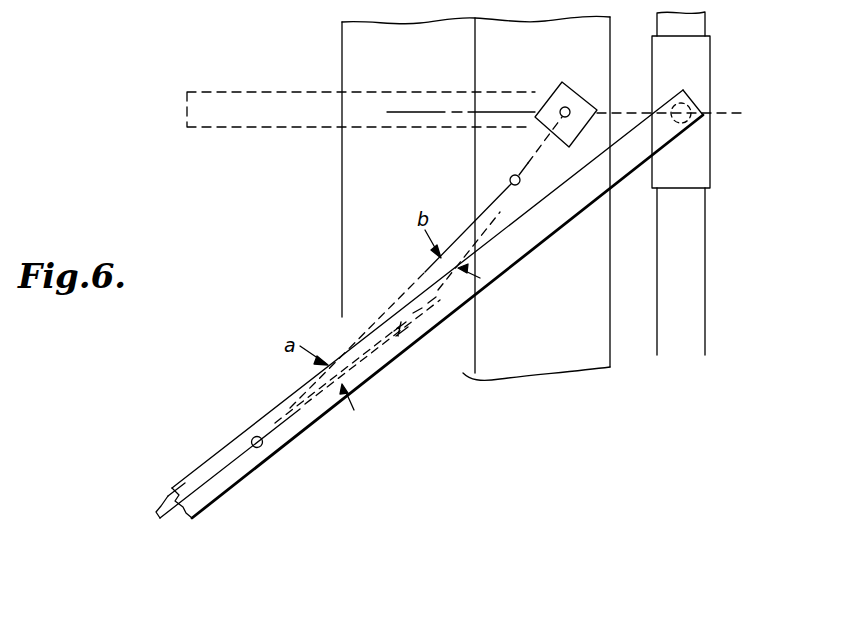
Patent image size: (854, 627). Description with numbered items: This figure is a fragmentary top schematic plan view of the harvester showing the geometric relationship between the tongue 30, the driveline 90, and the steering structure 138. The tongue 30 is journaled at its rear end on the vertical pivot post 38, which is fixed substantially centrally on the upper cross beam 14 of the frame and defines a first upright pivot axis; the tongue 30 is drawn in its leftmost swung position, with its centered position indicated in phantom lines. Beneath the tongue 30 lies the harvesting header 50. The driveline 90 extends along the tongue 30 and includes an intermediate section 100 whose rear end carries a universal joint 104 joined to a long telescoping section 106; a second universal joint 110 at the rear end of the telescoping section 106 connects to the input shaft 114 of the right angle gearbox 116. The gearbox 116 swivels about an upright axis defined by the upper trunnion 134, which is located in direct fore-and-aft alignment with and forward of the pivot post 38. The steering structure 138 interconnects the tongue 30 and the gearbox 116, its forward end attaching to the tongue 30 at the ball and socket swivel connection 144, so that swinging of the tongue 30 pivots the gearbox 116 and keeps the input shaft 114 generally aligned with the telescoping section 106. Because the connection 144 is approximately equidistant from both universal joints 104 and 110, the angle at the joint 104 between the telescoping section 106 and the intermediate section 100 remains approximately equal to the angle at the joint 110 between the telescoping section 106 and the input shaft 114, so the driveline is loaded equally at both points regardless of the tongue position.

The upper cross beam 14 is at (698, 232).
The tongue 30 is at (231, 92).
The vertical pivot post 38 is at (690, 96).
The harvesting header 50 is at (340, 185).
The mechanical driveline 90 is at (162, 499).
The intermediate section 100 is at (220, 470).
The universal joint 104 is at (253, 437).
The telescoping section 106 is at (384, 318).
The universal joint 110 is at (509, 180).
The input shaft 114 is at (536, 152).
The right angle gearbox 116 is at (545, 104).
The upper trunnion 134 is at (568, 104).
The steering structure 138 is at (424, 302).
The ball and socket swivel connection 144 is at (401, 334).